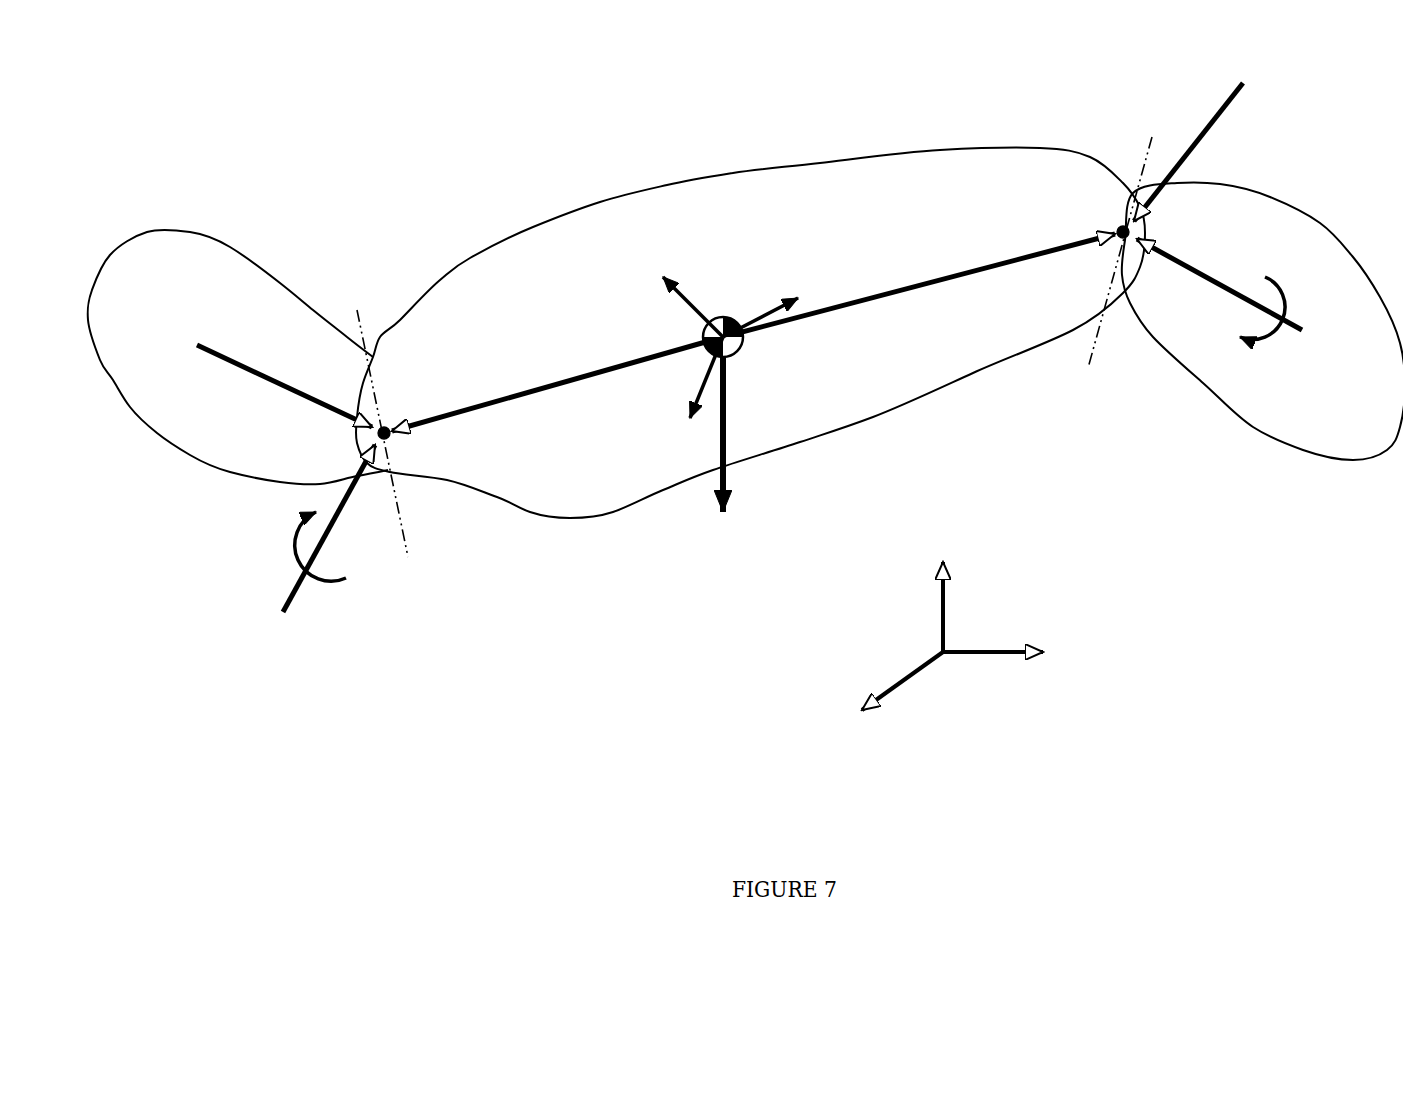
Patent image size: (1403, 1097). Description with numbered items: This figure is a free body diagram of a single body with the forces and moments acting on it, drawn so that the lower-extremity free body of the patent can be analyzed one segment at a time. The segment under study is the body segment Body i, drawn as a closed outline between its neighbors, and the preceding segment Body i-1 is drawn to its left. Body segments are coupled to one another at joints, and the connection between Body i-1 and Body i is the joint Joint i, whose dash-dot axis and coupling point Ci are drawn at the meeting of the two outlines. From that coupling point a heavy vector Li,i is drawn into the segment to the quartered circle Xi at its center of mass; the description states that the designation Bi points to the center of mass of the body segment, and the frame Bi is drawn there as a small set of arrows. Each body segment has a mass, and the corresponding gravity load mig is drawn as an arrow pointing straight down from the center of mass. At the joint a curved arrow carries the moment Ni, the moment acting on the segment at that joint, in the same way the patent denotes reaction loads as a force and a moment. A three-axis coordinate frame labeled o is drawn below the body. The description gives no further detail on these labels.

The preceding body segment Body i-1 is at (238, 357).
The body segment Body i is at (750, 333).
The joint Joint i is at (418, 462).
The joint point Ci is at (418, 388).
The vector from joint i to center of mass Li,i is at (557, 403).
The center of mass position X_i Xi is at (750, 308).
The body segment frame Bi is at (663, 345).
The gravity load mig is at (730, 454).
The joint moment Ni is at (310, 528).
The inertial frame {o} o is at (1089, 643).